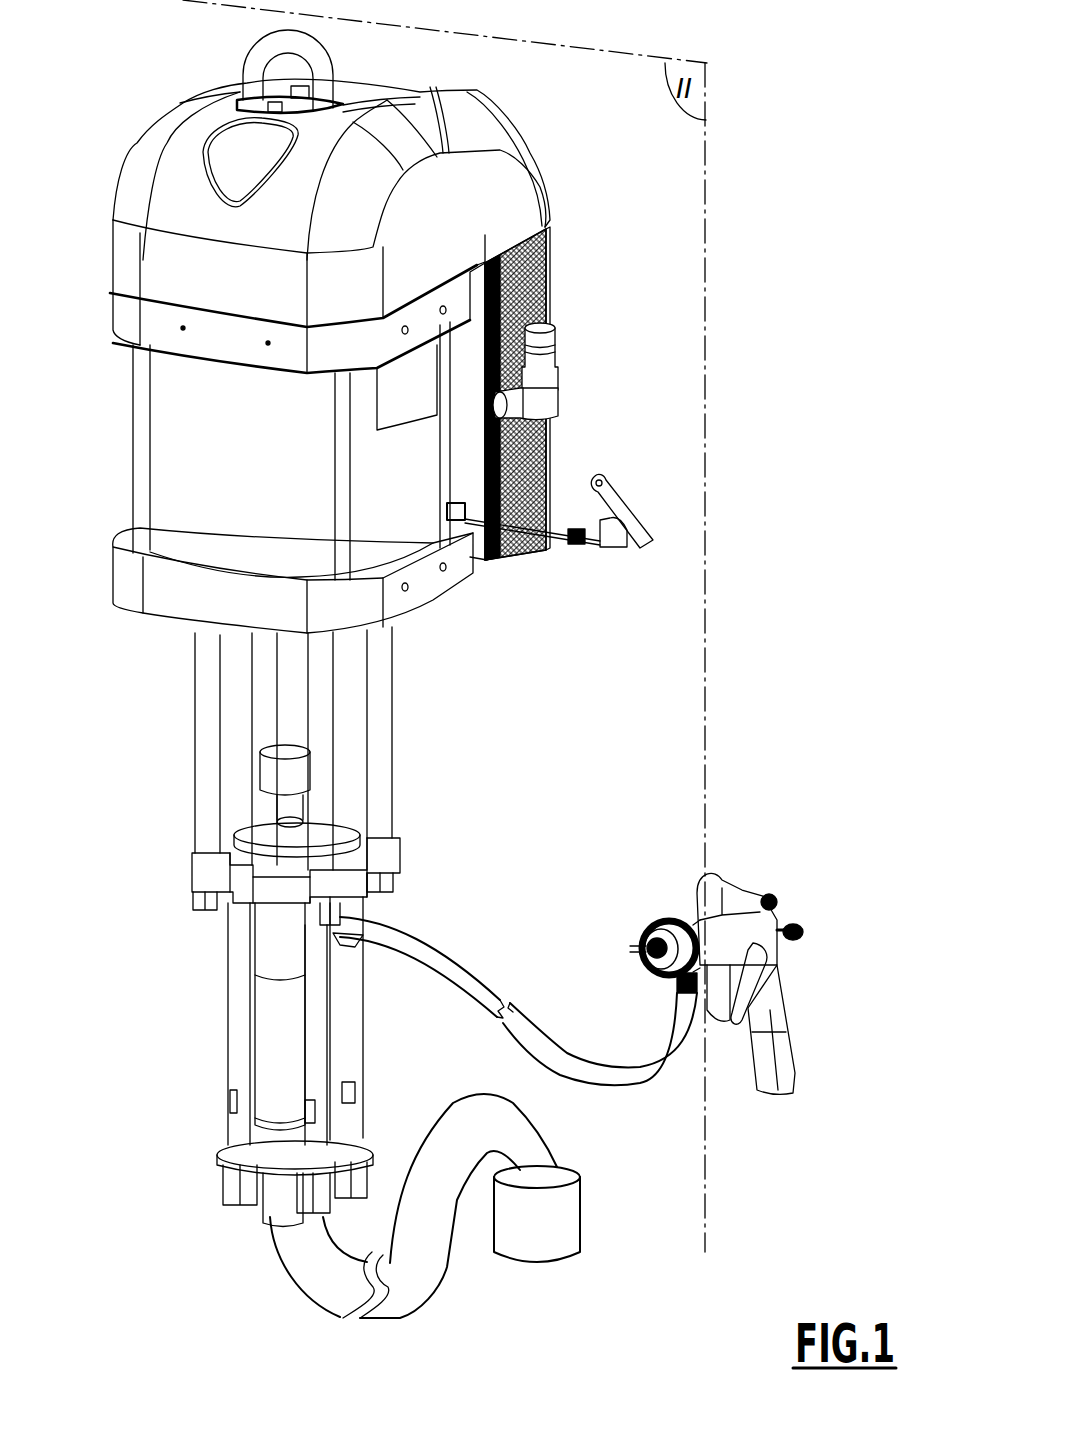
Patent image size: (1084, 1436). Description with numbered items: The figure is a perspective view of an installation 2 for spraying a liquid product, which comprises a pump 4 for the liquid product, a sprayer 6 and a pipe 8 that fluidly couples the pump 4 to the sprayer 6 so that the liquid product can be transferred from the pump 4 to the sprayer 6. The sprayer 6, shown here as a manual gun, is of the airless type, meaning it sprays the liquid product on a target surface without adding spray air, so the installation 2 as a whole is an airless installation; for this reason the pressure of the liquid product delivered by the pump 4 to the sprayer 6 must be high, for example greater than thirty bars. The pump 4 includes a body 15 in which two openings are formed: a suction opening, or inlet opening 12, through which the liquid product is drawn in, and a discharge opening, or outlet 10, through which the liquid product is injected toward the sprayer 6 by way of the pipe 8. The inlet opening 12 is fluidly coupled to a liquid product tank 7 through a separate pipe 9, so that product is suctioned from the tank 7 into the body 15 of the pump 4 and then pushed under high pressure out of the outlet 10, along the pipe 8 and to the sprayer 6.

The installation 2 is at (582, 245).
The pump 4 is at (393, 968).
The sprayer 6 is at (760, 860).
The liquid product tank 7 is at (542, 1230).
The pipe 8 is at (473, 980).
The pipe 9 is at (417, 1287).
The outlet 10 is at (350, 943).
The inlet opening 12 is at (280, 1235).
The body 15 is at (287, 1013).